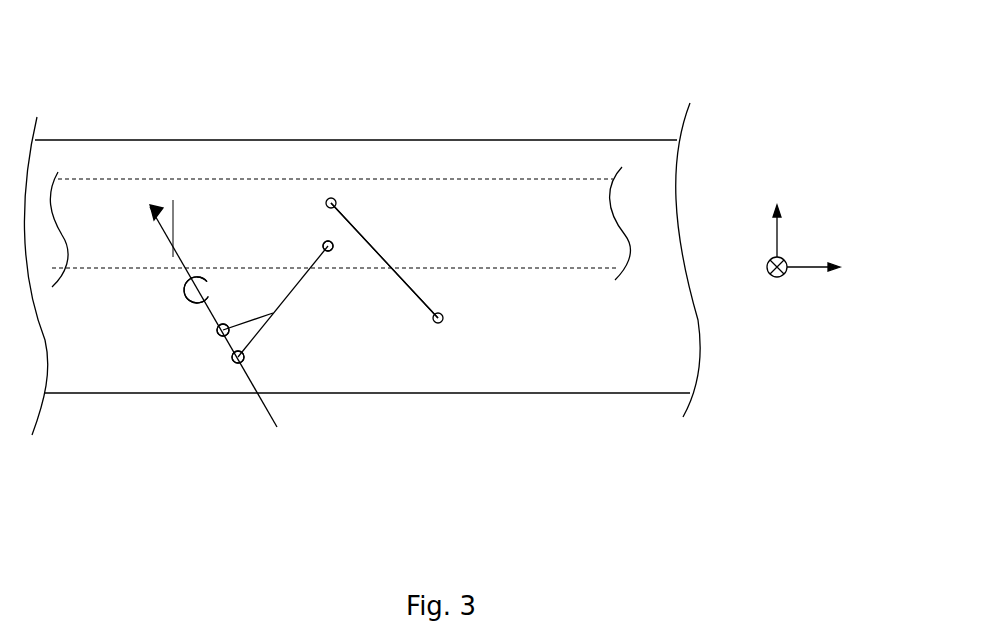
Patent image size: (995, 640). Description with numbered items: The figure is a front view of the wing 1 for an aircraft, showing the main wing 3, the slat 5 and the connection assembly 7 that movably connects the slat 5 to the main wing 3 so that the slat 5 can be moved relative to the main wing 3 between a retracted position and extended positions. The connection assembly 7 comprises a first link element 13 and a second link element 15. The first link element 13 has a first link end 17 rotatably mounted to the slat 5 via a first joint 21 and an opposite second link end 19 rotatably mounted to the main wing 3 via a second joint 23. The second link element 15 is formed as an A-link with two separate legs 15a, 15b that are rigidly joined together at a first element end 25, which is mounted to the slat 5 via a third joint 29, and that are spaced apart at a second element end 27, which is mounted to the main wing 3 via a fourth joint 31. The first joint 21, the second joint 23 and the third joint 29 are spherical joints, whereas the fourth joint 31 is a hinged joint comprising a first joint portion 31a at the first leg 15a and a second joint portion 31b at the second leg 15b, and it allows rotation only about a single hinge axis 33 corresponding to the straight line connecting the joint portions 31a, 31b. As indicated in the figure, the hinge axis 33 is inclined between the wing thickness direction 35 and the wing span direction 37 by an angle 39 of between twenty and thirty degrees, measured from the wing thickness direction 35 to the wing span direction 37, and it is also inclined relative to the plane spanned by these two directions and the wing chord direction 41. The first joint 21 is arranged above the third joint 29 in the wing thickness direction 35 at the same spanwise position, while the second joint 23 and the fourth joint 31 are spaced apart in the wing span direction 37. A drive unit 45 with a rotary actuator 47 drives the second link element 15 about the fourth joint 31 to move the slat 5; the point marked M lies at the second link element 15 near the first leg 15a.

The wing 1 is at (645, 88).
The main wing 3 is at (585, 353).
The slat 5 is at (510, 236).
The connection assembly 7 is at (385, 325).
The first link element 13 is at (391, 262).
The second link element 15 is at (289, 297).
The first leg 15a is at (230, 328).
The second leg 15b is at (246, 359).
The first link end 17 is at (339, 212).
The second link end 19 is at (430, 310).
The first joint 21 is at (333, 200).
The second joint 23 is at (444, 320).
The first element end 25 is at (320, 253).
The second element end 27 is at (264, 332).
The third joint 29 is at (325, 242).
The fourth joint 31 is at (261, 336).
The first joint portion 31a is at (223, 336).
The second joint portion 31b is at (246, 363).
The hinge axis 33 is at (180, 257).
The wing thickness direction 35 is at (777, 215).
The wing span direction 37 is at (831, 268).
The angle 39 is at (157, 205).
The wing chord direction 41 is at (775, 283).
The drive unit 45 is at (158, 327).
The rotary actuator 47 is at (184, 302).
The center point M is at (181, 293).